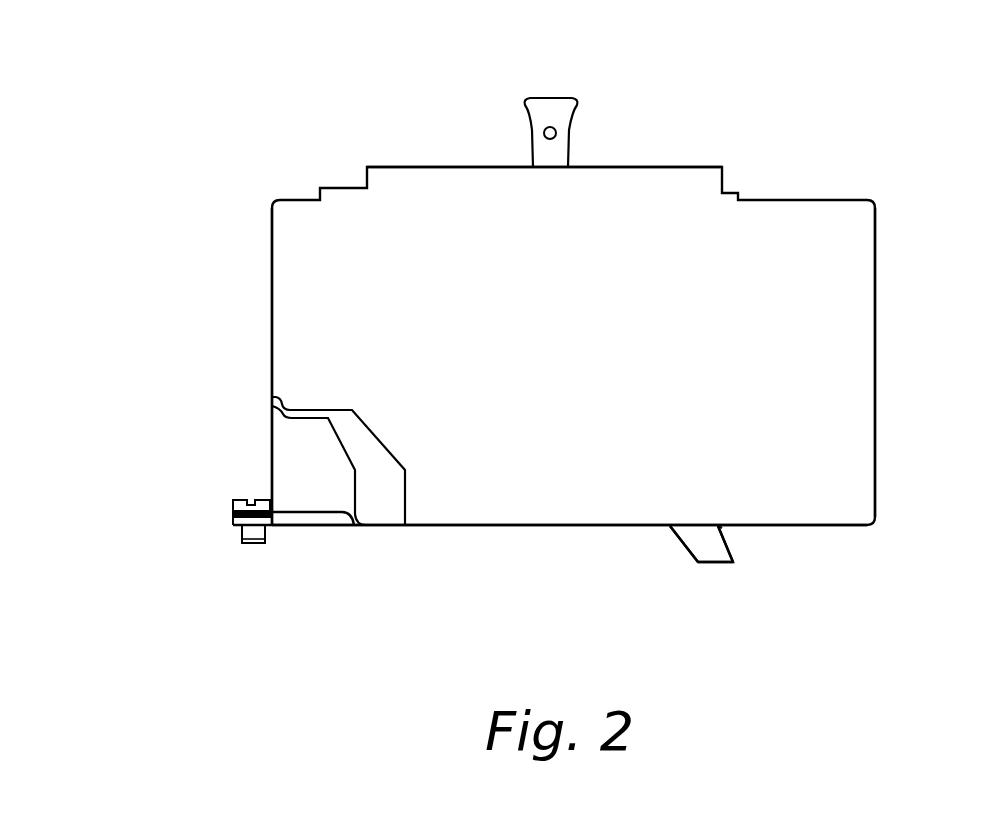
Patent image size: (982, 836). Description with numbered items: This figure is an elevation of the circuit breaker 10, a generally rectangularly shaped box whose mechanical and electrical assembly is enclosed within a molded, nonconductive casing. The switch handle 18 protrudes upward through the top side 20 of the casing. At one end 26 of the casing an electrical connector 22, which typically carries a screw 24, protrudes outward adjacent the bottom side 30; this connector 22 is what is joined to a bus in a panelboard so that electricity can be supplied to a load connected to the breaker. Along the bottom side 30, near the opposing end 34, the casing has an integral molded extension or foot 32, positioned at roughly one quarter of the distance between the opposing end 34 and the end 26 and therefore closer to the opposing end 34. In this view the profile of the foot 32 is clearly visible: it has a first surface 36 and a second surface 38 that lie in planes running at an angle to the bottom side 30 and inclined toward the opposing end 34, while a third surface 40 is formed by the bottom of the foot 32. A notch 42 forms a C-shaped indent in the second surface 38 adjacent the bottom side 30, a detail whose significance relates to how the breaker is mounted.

The circuit breaker 10 is at (744, 123).
The switch handle 18 is at (557, 97).
The top side 20 is at (462, 167).
The electrical connector 22 is at (232, 520).
The screw 24 is at (253, 545).
The end 26 is at (270, 327).
The bottom side 30 is at (500, 527).
The foot 32 is at (697, 563).
The opposing end 34 is at (876, 425).
The first surface 36 is at (678, 537).
The second surface 38 is at (733, 561).
The third surface 40 is at (715, 566).
The notch 42 is at (722, 527).